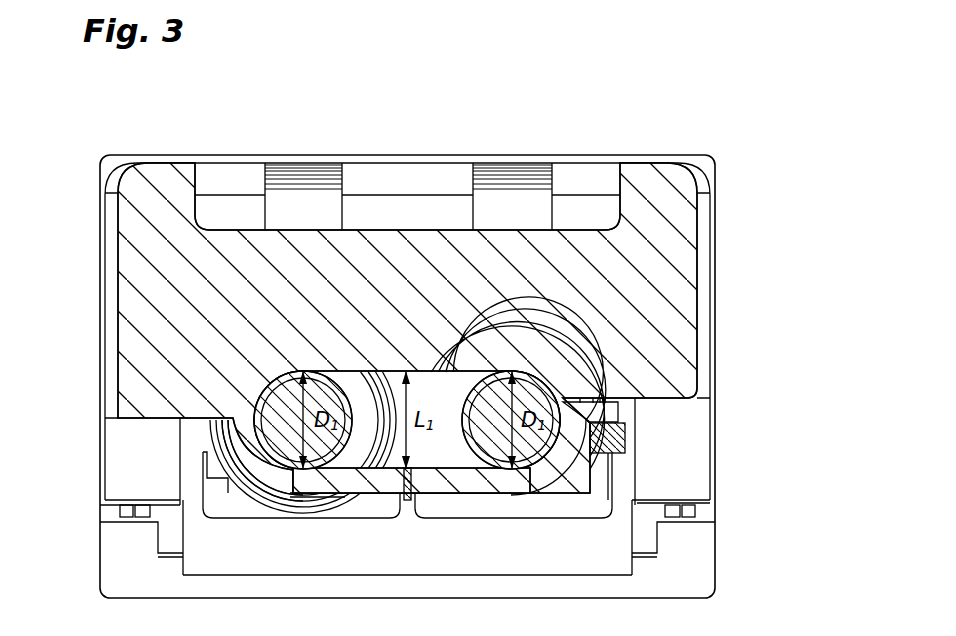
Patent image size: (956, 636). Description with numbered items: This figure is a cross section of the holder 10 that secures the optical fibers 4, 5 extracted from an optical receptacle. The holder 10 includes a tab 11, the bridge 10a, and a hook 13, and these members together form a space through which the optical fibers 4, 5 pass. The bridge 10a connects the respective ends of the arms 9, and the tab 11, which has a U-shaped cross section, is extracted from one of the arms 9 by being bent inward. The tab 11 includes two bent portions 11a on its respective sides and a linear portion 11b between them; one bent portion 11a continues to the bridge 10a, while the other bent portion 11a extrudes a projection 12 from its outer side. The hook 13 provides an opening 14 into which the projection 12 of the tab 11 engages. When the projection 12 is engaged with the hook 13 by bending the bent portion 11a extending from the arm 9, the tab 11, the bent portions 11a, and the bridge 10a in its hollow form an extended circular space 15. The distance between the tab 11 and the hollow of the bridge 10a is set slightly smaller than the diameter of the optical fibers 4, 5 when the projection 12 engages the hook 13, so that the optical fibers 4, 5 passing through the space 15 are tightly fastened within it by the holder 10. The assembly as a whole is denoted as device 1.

The linear motion guide unit 1 is at (652, 106).
The optical fiber 4 is at (268, 442).
The optical fiber 5 is at (519, 466).
The arm 9 is at (198, 410).
The holder 10 is at (347, 497).
The bridge 10a is at (680, 300).
The tab 11 is at (453, 499).
The bent portion 11a is at (252, 458).
The linear portion 11b is at (387, 486).
The projection 12 is at (608, 410).
The hook 13 is at (616, 460).
The opening 14 is at (612, 421).
The circular space 15 is at (415, 468).